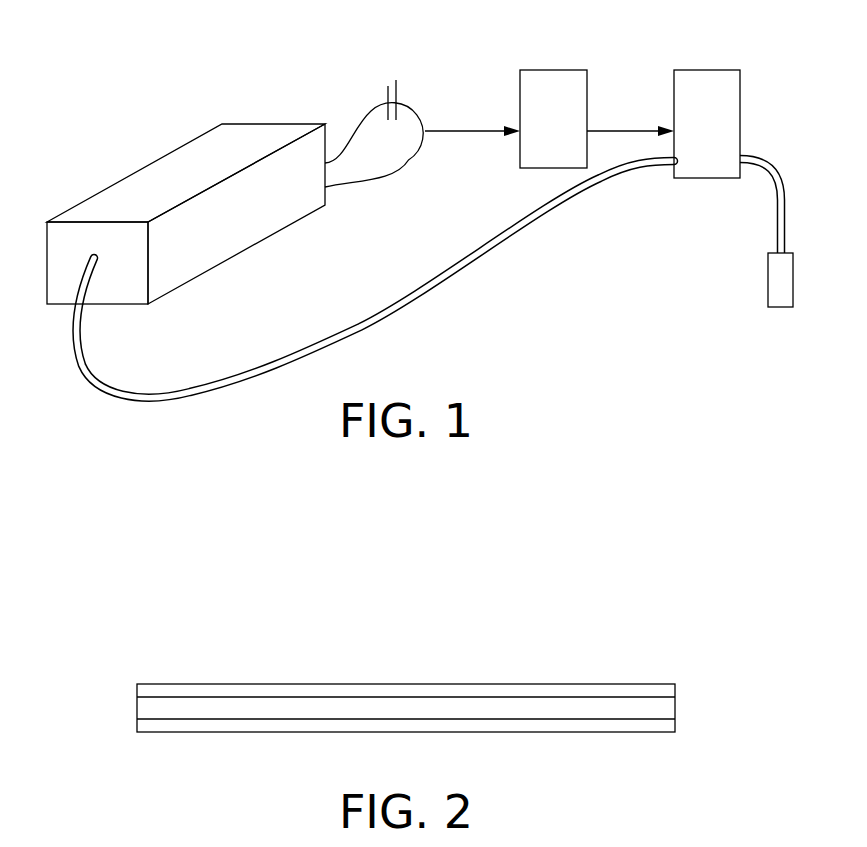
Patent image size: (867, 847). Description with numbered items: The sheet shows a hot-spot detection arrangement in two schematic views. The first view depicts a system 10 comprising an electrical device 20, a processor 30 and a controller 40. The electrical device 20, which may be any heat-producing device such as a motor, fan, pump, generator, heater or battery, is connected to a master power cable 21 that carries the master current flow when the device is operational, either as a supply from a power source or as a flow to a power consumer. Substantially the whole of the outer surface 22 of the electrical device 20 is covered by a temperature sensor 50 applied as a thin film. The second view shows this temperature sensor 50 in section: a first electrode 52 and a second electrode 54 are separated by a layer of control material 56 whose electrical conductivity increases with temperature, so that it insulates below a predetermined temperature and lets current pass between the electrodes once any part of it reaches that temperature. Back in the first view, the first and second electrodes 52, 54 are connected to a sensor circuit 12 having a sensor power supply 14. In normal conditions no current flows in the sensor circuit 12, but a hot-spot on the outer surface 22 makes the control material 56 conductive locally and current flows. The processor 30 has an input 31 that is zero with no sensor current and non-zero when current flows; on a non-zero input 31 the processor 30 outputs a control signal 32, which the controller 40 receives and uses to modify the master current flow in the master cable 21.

In FIG. 1, the system 10 is at (96, 75).
In FIG. 1, the sensor circuit 12 is at (413, 165).
In FIG. 1, the sensor power supply 14 is at (397, 95).
In FIG. 1, the electrical device 20 is at (68, 210).
In FIG. 1, the master power cable 21 is at (92, 367).
In FIG. 1, the outer surface 22 is at (177, 157).
In FIG. 1, the processor 30 is at (551, 80).
In FIG. 1, the input 31 is at (459, 128).
In FIG. 1, the control signal 32 is at (618, 128).
In FIG. 1, the controller 40 is at (708, 80).
In FIG. 1, the temperature sensor 50 is at (258, 228).
In FIG. 2, the temperature sensor 50 is at (243, 642).
In FIG. 2, the first electrode 52 is at (641, 728).
In FIG. 2, the second electrode 54 is at (641, 690).
In FIG. 2, the control material 56 is at (666, 707).